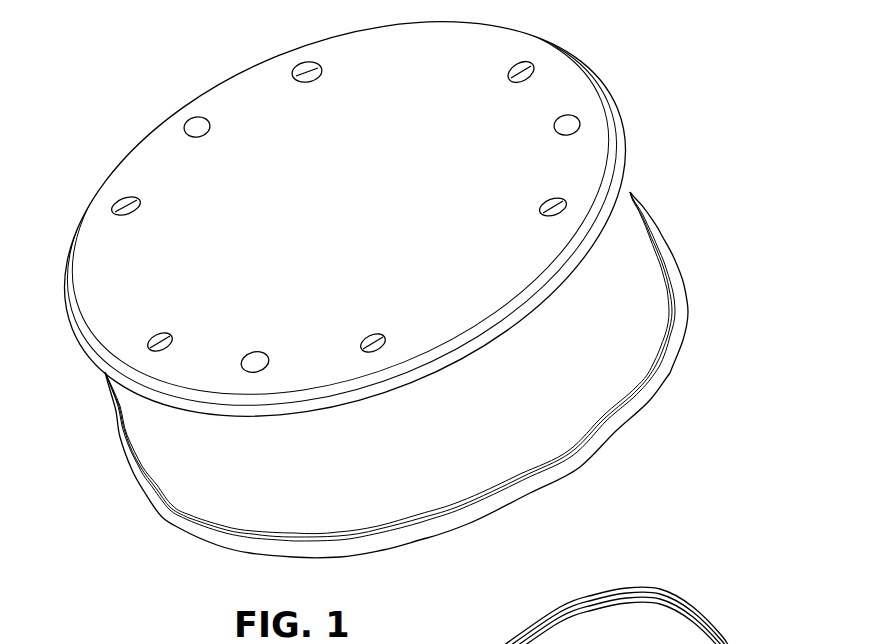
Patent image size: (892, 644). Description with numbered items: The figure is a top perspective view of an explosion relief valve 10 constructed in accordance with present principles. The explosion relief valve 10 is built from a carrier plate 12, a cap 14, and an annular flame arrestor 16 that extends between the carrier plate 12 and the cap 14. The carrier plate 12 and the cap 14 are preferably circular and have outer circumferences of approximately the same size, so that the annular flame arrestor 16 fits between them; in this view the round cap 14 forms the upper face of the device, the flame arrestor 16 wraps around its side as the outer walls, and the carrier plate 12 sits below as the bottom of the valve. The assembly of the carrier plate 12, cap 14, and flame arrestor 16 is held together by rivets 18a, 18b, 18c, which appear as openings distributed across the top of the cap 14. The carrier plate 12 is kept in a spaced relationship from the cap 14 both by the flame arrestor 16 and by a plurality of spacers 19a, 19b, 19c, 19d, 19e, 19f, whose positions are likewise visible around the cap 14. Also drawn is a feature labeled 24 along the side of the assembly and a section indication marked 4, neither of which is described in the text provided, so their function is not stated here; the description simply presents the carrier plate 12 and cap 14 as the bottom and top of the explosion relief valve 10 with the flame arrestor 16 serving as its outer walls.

The explosion relief valve 10 is at (752, 156).
The carrier plate 12 is at (652, 382).
The cap 14 is at (232, 94).
The annular flame arrestor 16 is at (627, 232).
The bead 24 is at (700, 306).
The rivet 18a is at (252, 358).
The rivet 18b is at (198, 128).
The rivet 18c is at (565, 125).
The spacer 19a is at (160, 343).
The spacer 19b is at (125, 207).
The spacer 19c is at (308, 74).
The spacer 19d is at (520, 72).
The spacer 19e is at (553, 207).
The spacer 19f is at (374, 343).
The section line 4- 4 is at (605, 80).